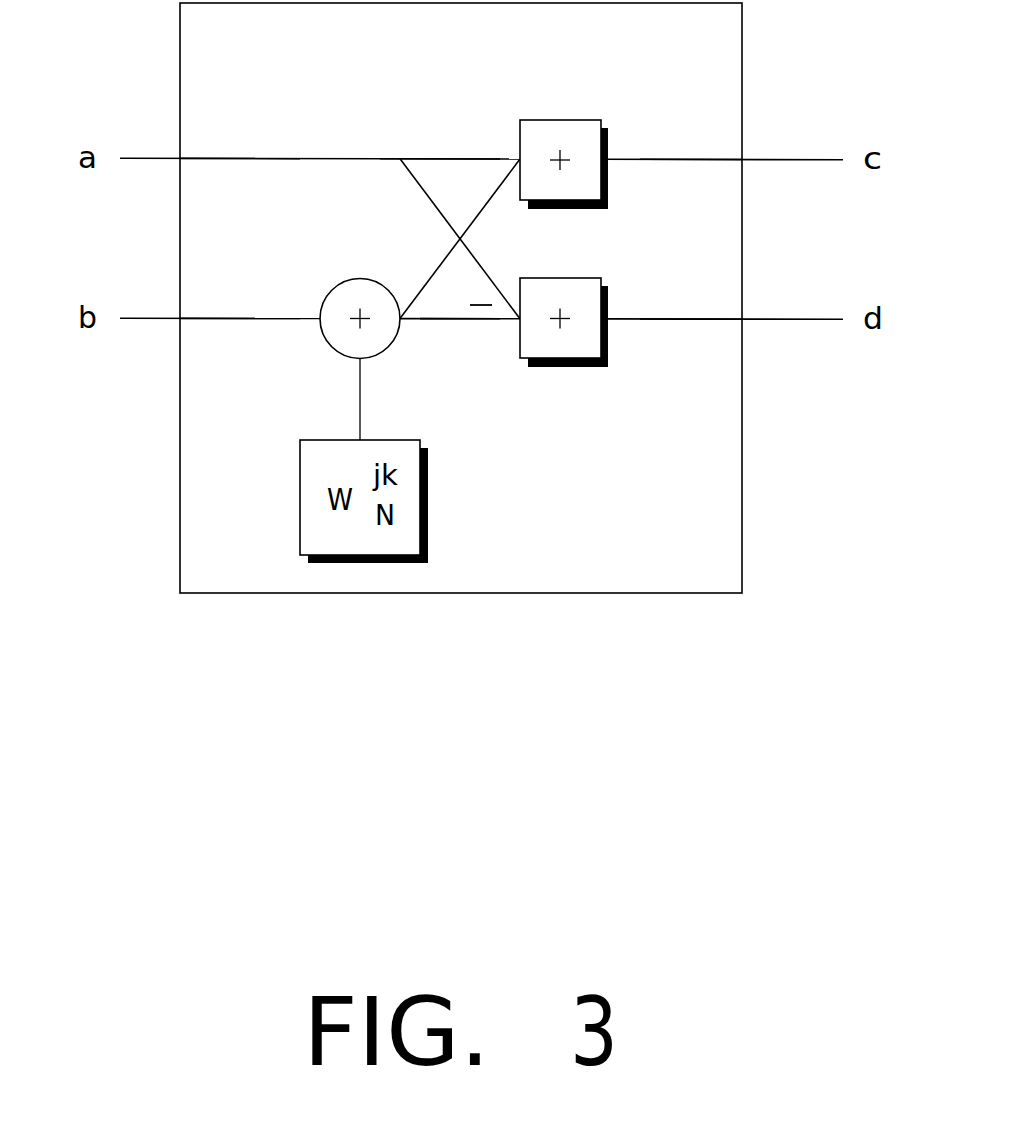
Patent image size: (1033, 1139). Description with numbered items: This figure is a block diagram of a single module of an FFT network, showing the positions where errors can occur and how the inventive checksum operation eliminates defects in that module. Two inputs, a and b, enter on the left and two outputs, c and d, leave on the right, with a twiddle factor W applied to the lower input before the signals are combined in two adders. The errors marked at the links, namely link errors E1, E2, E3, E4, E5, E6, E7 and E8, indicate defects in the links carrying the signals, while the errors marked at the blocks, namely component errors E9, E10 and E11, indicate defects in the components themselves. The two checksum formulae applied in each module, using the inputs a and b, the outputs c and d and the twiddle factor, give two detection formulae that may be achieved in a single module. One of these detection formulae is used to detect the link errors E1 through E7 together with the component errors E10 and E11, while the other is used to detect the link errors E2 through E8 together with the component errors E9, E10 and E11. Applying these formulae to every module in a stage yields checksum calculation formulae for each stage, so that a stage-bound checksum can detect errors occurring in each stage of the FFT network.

The link error E1 is at (239, 158).
The link error E2 is at (441, 158).
The link error E3 is at (428, 203).
The link error E4 is at (492, 205).
The link error E5 is at (681, 158).
The link error E6 is at (681, 320).
The link error E7 is at (460, 320).
The link error E8 is at (239, 318).
The component error E9 is at (327, 344).
The component error E10 is at (560, 119).
The component error E11 is at (560, 360).